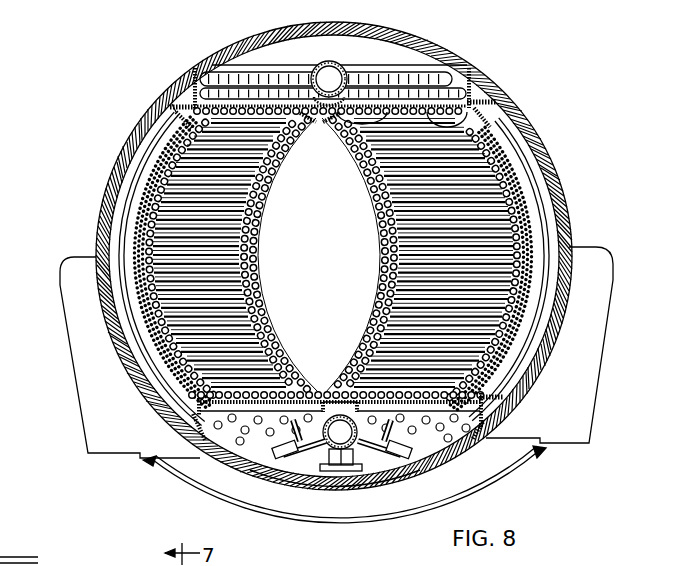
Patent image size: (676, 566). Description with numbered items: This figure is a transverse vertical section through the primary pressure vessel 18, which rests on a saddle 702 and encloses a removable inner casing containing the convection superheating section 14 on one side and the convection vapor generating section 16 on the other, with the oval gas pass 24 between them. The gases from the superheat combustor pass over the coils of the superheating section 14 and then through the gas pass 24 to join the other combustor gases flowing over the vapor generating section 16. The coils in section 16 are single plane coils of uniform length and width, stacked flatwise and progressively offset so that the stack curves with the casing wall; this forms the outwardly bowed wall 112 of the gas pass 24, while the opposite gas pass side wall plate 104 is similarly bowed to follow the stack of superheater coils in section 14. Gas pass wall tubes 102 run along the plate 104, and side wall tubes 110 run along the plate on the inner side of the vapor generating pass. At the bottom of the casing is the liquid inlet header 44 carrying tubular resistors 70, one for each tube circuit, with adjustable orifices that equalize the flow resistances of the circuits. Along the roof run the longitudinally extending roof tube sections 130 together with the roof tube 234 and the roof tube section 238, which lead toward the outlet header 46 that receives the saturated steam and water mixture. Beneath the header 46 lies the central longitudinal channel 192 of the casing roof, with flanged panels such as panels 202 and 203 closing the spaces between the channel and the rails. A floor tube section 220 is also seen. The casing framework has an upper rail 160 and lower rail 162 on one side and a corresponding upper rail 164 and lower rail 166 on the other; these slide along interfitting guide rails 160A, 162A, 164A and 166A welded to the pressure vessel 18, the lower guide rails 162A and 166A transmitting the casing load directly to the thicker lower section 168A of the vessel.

The convection superheating section 14 is at (463, 240).
The convection vapor generating section 16 is at (190, 227).
The primary pressure vessel 18 is at (537, 134).
The gas pass 24 is at (319, 255).
The liquid inlet header 44 is at (329, 437).
The outlet header 46 is at (340, 62).
The tubular resistors 70 is at (292, 443).
The gas pass wall tubes 102 is at (368, 190).
The gas pass side wall plate 104 is at (372, 314).
The side wall tubes 110 is at (268, 203).
The outwardly bowed wall 112 is at (262, 255).
The roof tube sections 130 is at (265, 108).
The upper rail 160 is at (482, 100).
The guide rail 160A is at (471, 87).
The lower rail 162 is at (470, 440).
The lower guide rail 162A is at (484, 410).
The upper rail 164 is at (180, 118).
The guide rail 164A is at (192, 88).
The lower rail 166 is at (198, 402).
The lower guide rail 166A is at (197, 416).
The thicker lower section 168A is at (391, 483).
The central longitudinal channel 192 is at (414, 103).
The roof panel 202 is at (242, 108).
The roof panel 203 is at (381, 110).
The floor tube section 220 is at (487, 392).
The roof tube 234 is at (185, 112).
The roof tube section 238 is at (205, 96).
The saddle 702 is at (84, 360).